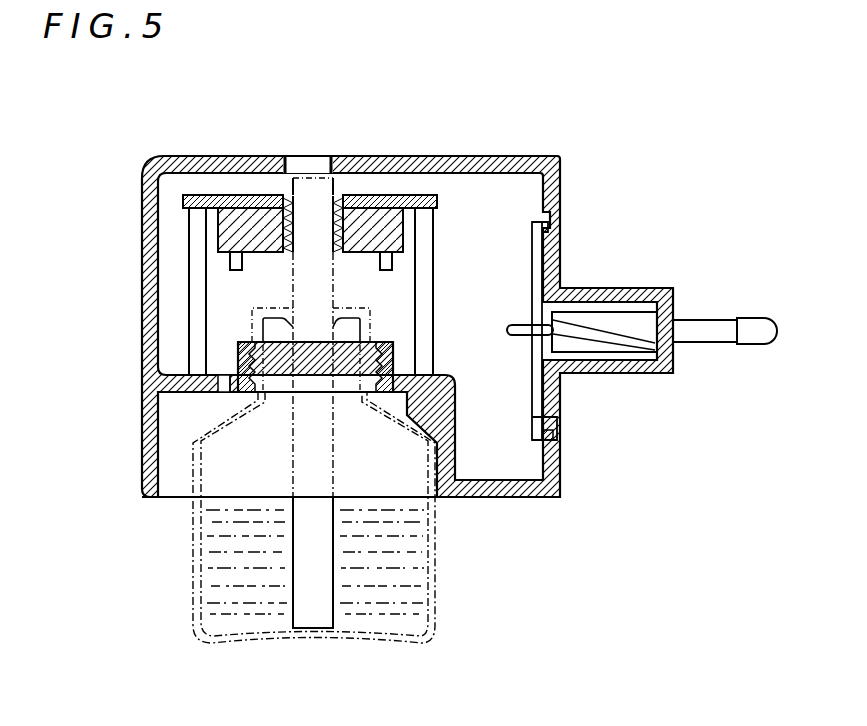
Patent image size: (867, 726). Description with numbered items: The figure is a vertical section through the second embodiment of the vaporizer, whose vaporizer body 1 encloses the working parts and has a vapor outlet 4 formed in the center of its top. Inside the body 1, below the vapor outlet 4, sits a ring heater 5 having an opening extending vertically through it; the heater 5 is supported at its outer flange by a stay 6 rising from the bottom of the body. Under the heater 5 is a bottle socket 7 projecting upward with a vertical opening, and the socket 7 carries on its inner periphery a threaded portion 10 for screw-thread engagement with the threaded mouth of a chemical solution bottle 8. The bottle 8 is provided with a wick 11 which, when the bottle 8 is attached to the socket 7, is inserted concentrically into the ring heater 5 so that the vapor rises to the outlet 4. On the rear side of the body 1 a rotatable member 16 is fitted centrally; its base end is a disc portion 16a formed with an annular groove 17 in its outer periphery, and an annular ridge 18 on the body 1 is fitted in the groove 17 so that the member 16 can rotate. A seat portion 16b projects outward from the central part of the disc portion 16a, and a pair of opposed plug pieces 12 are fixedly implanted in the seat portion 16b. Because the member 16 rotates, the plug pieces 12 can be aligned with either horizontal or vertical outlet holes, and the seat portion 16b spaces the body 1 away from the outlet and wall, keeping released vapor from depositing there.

The vaporizer body 1 is at (141, 212).
The vapor outlet 4 is at (308, 155).
The ring heater 5 is at (362, 198).
The stay 6 is at (434, 238).
The bottle socket 7 is at (237, 352).
The chemical solution bottle 8 is at (435, 570).
The threaded portion 10 is at (238, 393).
The wick 11 is at (320, 628).
The plug pieces 12 is at (760, 321).
The rotatable member 16 is at (608, 384).
The disc portion 16a is at (568, 424).
The seat portion 16b is at (614, 374).
The annular groove 17 is at (565, 237).
The annular ridge 18 is at (560, 208).